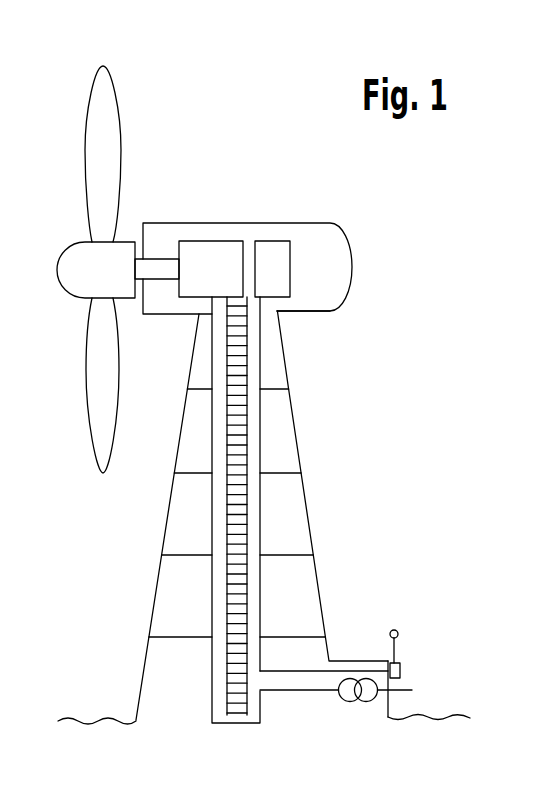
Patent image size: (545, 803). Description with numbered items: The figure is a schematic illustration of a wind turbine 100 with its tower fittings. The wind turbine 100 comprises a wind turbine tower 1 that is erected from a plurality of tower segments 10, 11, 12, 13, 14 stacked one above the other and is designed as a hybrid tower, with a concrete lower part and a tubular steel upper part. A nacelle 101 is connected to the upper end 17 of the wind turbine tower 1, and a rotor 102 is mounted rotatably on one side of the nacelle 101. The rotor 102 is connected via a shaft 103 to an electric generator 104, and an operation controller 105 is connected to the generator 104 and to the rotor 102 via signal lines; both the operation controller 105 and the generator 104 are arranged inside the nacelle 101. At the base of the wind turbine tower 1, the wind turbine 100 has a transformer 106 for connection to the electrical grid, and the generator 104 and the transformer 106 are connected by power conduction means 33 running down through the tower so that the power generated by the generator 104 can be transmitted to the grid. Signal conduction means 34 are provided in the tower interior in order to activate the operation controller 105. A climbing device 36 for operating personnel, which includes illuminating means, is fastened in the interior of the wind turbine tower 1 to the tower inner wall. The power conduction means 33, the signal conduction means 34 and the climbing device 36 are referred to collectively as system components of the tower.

The wind turbine tower 1 is at (298, 556).
The tower segment 10 is at (162, 688).
The tower segment 11 is at (173, 578).
The tower segment 12 is at (182, 510).
The tower segment 13 is at (198, 433).
The tower segment 14 is at (202, 355).
The upper end 17 is at (280, 312).
The power conduction means 33 is at (210, 618).
The signal conduction means 34 is at (262, 506).
The climbing device 36 is at (247, 358).
The wind turbine 100 is at (317, 438).
The nacelle 101 is at (313, 228).
The rotor 102 is at (70, 256).
The shaft 103 is at (160, 268).
The electric generator 104 is at (220, 258).
The operation controller 105 is at (272, 255).
The transformer 106 is at (370, 701).